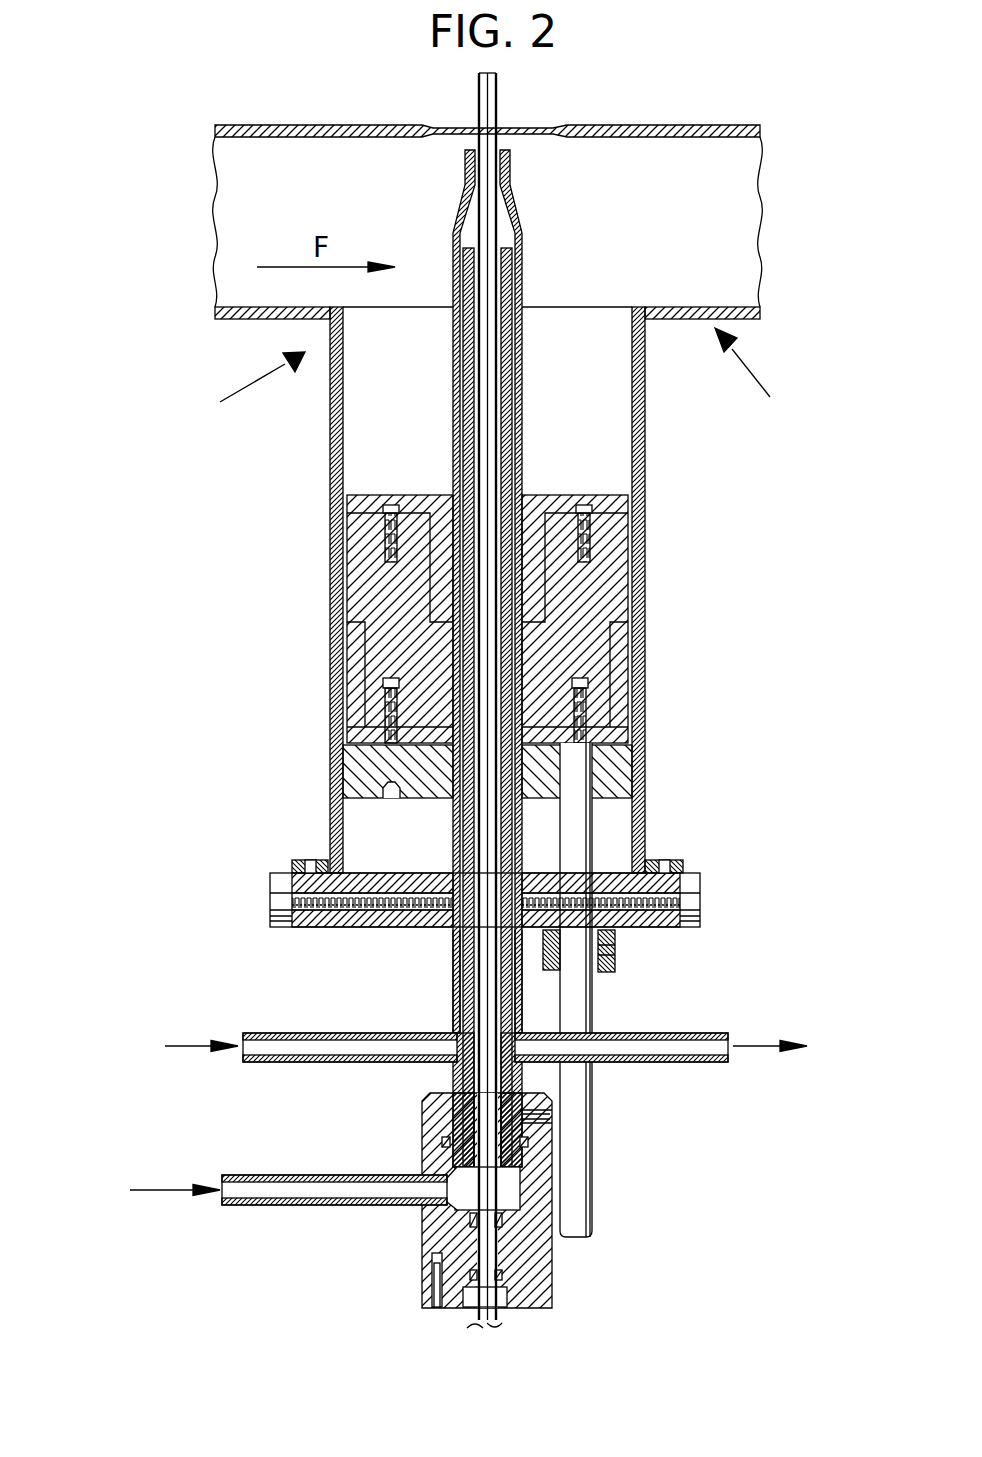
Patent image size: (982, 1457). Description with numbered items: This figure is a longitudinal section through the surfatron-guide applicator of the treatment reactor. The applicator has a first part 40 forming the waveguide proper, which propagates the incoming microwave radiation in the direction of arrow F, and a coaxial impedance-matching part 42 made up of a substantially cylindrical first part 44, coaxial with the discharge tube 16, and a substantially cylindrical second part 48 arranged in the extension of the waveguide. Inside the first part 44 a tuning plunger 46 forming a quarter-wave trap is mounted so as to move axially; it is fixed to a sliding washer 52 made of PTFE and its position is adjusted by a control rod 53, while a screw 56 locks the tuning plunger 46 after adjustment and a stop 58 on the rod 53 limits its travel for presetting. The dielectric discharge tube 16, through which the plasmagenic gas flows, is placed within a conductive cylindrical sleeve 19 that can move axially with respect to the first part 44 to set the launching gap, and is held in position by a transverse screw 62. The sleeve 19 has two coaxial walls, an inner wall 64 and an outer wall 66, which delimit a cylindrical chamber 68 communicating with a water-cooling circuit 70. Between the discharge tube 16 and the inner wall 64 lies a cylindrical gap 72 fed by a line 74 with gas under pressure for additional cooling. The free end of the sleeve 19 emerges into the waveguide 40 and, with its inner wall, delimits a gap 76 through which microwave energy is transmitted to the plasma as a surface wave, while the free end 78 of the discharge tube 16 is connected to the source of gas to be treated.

The discharge tube 16 is at (488, 350).
The sleeve 19 is at (453, 948).
The first part 40 is at (328, 126).
The impedance-matching part 42 is at (242, 388).
The first part 44 is at (330, 433).
The tuning plunger 46 is at (372, 583).
The second part 48 is at (761, 372).
The sliding washer 52 is at (347, 770).
The rod 53 is at (590, 1013).
The screw 56 is at (673, 897).
The stop 58 is at (613, 935).
The transverse screw 62 is at (297, 893).
The inner wall 64 is at (467, 1015).
The outer wall 66 is at (453, 988).
The cylindrical chamber 68 is at (462, 823).
The water-cooling circuit 70 is at (278, 1033).
The gap 72 is at (473, 1062).
The line 74 is at (279, 1172).
The gap 76 is at (457, 143).
The free end 78 is at (490, 1325).